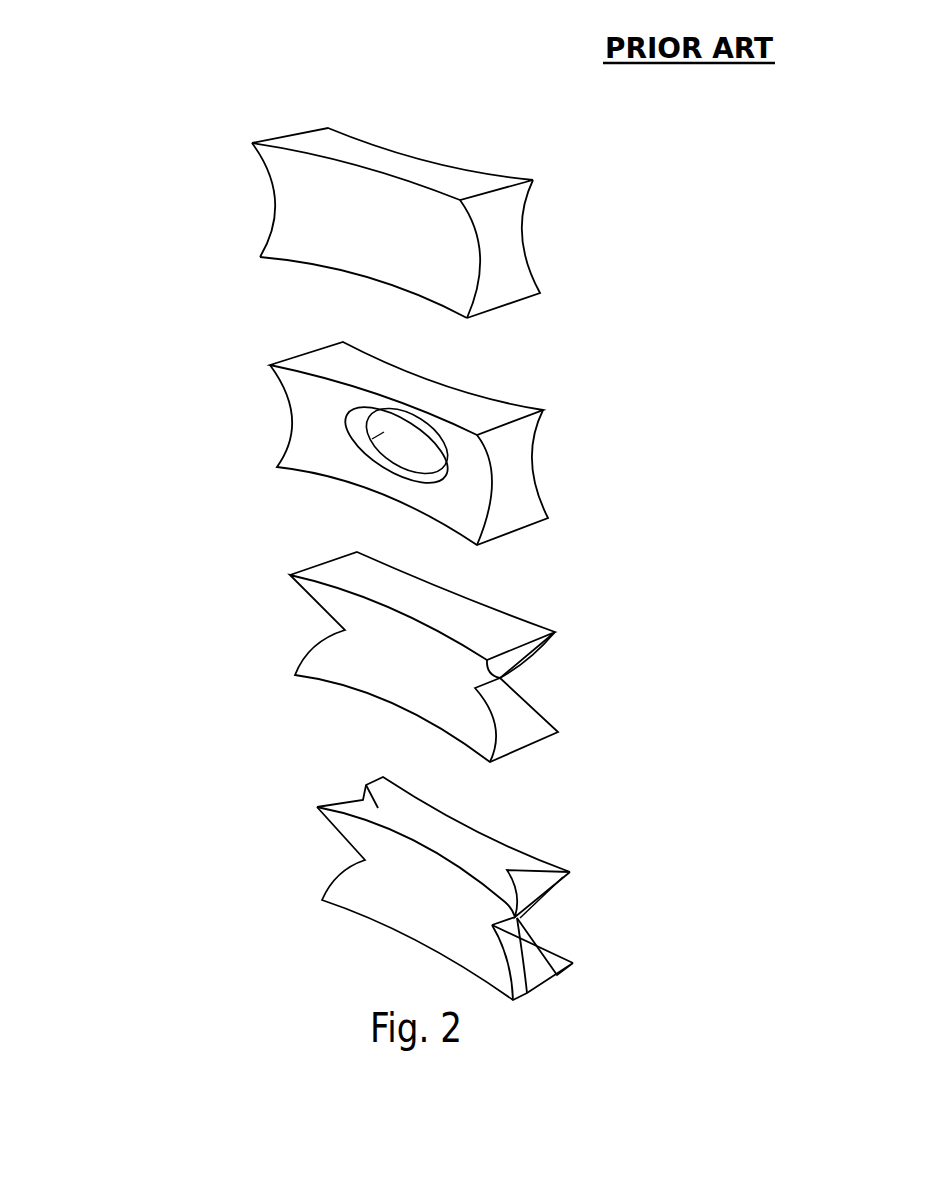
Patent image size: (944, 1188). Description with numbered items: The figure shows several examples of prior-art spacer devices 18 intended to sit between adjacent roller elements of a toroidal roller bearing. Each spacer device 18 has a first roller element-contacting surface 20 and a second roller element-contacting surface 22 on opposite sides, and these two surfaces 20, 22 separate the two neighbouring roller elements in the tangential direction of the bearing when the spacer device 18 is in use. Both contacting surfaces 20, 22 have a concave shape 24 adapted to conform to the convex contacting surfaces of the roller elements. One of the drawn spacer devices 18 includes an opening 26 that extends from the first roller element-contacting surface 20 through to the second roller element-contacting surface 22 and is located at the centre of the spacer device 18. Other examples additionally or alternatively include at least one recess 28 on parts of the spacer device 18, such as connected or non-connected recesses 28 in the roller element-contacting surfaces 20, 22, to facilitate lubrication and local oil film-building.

The spacer device 18 is at (122, 139).
The first roller element-contacting surface 20 is at (322, 247).
The second roller element-contacting surface 22 is at (497, 232).
The concave shape 24 is at (298, 213).
The opening 26 is at (350, 440).
The recess 28 is at (340, 648).